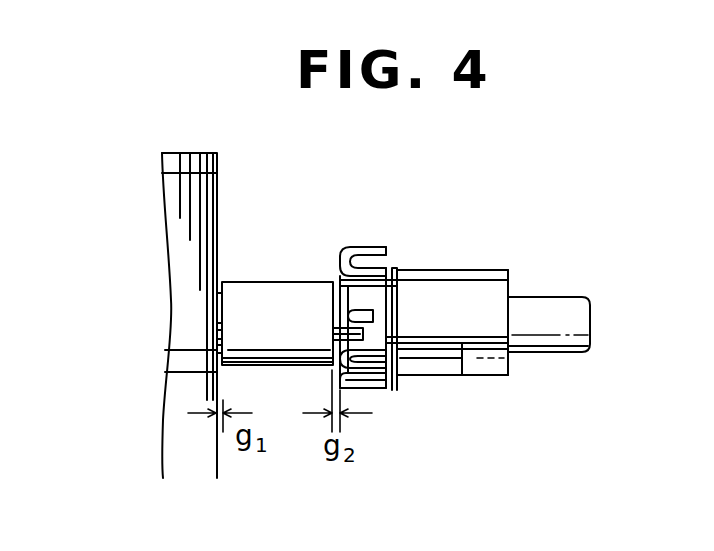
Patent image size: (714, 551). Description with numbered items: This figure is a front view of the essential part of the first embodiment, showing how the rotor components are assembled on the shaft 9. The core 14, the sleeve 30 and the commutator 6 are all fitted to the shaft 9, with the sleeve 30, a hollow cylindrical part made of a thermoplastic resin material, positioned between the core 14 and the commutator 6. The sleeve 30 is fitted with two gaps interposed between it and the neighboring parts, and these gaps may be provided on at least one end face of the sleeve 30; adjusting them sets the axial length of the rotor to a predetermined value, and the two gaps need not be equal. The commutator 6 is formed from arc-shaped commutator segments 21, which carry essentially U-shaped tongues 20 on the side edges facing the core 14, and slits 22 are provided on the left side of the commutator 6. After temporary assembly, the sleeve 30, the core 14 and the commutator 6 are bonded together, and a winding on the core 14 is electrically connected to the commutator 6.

The core 14 is at (203, 211).
The sleeve 30 is at (260, 298).
The tongue 20 is at (372, 246).
The commutator segment 21 is at (427, 305).
The commutator 6 is at (472, 270).
The shaft 9 is at (547, 297).
The slit 22 is at (473, 376).